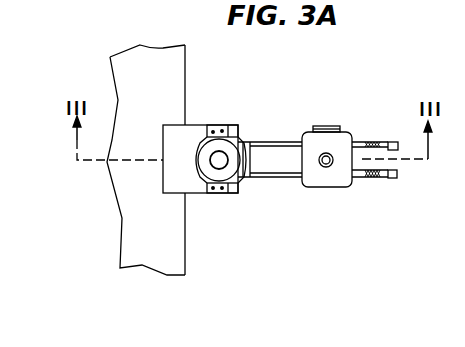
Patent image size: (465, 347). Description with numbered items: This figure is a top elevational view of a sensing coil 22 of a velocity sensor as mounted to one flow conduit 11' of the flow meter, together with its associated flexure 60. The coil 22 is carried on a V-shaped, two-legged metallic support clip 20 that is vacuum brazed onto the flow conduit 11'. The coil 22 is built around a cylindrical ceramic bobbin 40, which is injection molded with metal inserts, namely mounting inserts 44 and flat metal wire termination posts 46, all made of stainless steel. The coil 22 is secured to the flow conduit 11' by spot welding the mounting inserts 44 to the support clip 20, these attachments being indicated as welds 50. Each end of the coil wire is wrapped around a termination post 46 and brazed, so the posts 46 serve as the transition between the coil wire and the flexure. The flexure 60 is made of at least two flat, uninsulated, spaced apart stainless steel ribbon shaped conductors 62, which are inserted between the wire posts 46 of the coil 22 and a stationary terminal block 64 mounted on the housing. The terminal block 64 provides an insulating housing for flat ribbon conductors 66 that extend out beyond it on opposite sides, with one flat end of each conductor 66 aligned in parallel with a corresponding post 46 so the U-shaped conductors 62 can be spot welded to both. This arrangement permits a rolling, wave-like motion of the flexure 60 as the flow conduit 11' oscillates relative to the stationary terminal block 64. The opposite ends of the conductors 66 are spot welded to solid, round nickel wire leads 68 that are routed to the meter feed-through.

The flow conduit 11' is at (122, 160).
The support clip 20 is at (167, 194).
The sensing coil 22 is at (201, 147).
The bobbin 40 is at (242, 136).
The mounting inserts 44 is at (219, 124).
The wire termination posts 46 is at (252, 142).
The welds 50 is at (208, 132).
The flexure 60 is at (272, 236).
The ribbon shaped conductors 62 is at (286, 142).
The terminal block 64 is at (304, 132).
The flat ribbon conductors 66 is at (357, 141).
The wire leads 68 is at (394, 141).